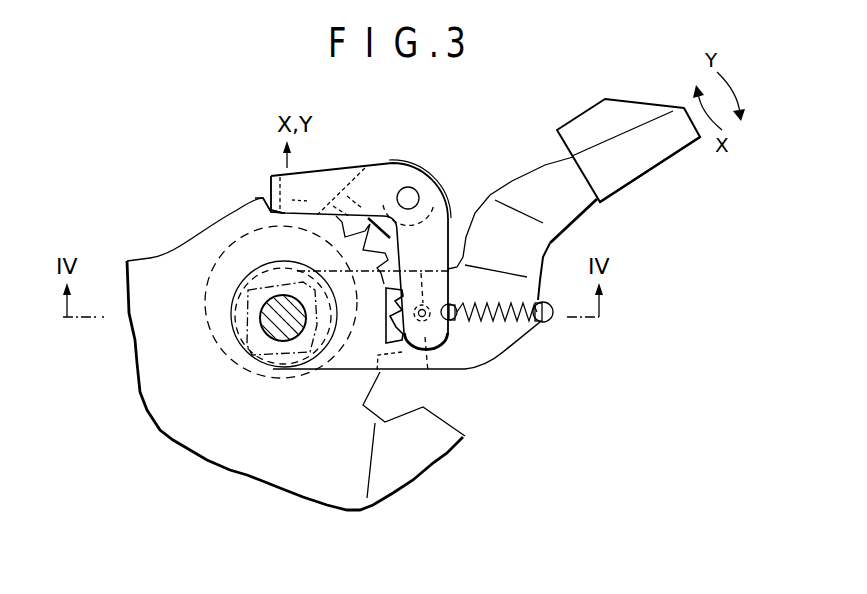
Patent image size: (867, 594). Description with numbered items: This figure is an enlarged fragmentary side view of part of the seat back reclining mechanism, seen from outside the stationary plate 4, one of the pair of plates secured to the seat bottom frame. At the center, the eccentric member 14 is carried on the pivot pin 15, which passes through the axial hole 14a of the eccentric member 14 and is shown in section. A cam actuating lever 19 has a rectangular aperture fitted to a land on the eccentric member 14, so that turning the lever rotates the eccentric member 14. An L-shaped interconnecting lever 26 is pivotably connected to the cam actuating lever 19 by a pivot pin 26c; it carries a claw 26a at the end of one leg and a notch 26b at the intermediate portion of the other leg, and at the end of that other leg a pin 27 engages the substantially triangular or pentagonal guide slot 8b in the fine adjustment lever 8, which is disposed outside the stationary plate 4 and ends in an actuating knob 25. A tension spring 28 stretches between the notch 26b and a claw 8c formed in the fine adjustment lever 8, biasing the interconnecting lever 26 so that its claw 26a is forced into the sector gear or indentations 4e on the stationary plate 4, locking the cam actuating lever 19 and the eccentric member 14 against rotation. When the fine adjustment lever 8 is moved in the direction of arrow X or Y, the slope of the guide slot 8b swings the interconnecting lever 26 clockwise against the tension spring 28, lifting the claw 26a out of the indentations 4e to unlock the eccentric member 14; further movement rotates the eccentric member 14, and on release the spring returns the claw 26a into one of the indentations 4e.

The stationary plate 4 is at (198, 433).
The sector gear or indentations 4e is at (268, 211).
The fine adjustment lever 8 is at (530, 250).
The guide slot 8b is at (410, 344).
The claw 8c is at (549, 322).
The eccentric member 14 is at (257, 258).
The axial hole 14a is at (260, 313).
The pivot pin 15 is at (282, 342).
The cam actuating lever 19 is at (412, 160).
The actuating knob 25 is at (592, 128).
The interconnecting lever 26 is at (337, 166).
The claw 26a is at (271, 182).
The notch 26b is at (468, 327).
The pivot pin 26c is at (411, 195).
The pin 27 is at (474, 305).
The tension spring 28 is at (508, 338).